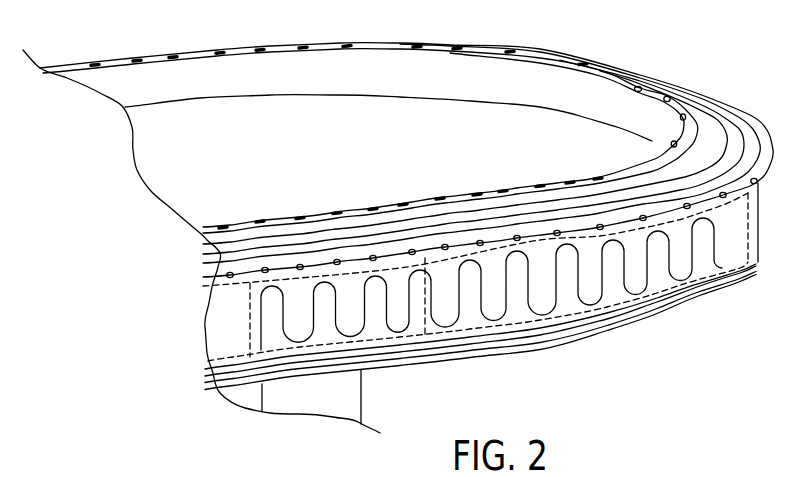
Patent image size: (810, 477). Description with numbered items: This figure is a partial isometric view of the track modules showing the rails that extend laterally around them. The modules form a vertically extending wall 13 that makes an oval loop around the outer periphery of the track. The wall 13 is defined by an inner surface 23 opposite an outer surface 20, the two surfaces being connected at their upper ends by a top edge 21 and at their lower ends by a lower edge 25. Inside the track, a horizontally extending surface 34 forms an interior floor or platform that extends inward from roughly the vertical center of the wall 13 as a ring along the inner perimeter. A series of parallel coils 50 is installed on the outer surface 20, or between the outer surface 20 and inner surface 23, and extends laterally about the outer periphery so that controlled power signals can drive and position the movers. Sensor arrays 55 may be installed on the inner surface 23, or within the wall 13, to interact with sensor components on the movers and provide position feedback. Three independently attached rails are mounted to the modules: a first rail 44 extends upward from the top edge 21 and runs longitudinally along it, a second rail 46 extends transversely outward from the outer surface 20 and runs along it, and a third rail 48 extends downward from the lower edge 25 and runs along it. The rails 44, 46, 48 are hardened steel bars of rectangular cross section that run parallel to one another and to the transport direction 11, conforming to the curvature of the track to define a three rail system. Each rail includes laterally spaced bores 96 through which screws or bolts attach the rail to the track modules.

The transport direction 11 is at (778, 155).
The vertically extending wall 13 is at (748, 268).
The outer surface 20 is at (515, 330).
The top edge 21 is at (712, 113).
The inner surface 23 is at (277, 81).
The lower edge 25 is at (658, 320).
The horizontally extending surface 34 is at (262, 153).
The first rail 44 is at (357, 212).
The second rail 46 is at (763, 170).
The third rail 48 is at (443, 355).
The coils 50 is at (708, 252).
The sensor arrays 55 is at (473, 75).
The bores 96 is at (588, 67).